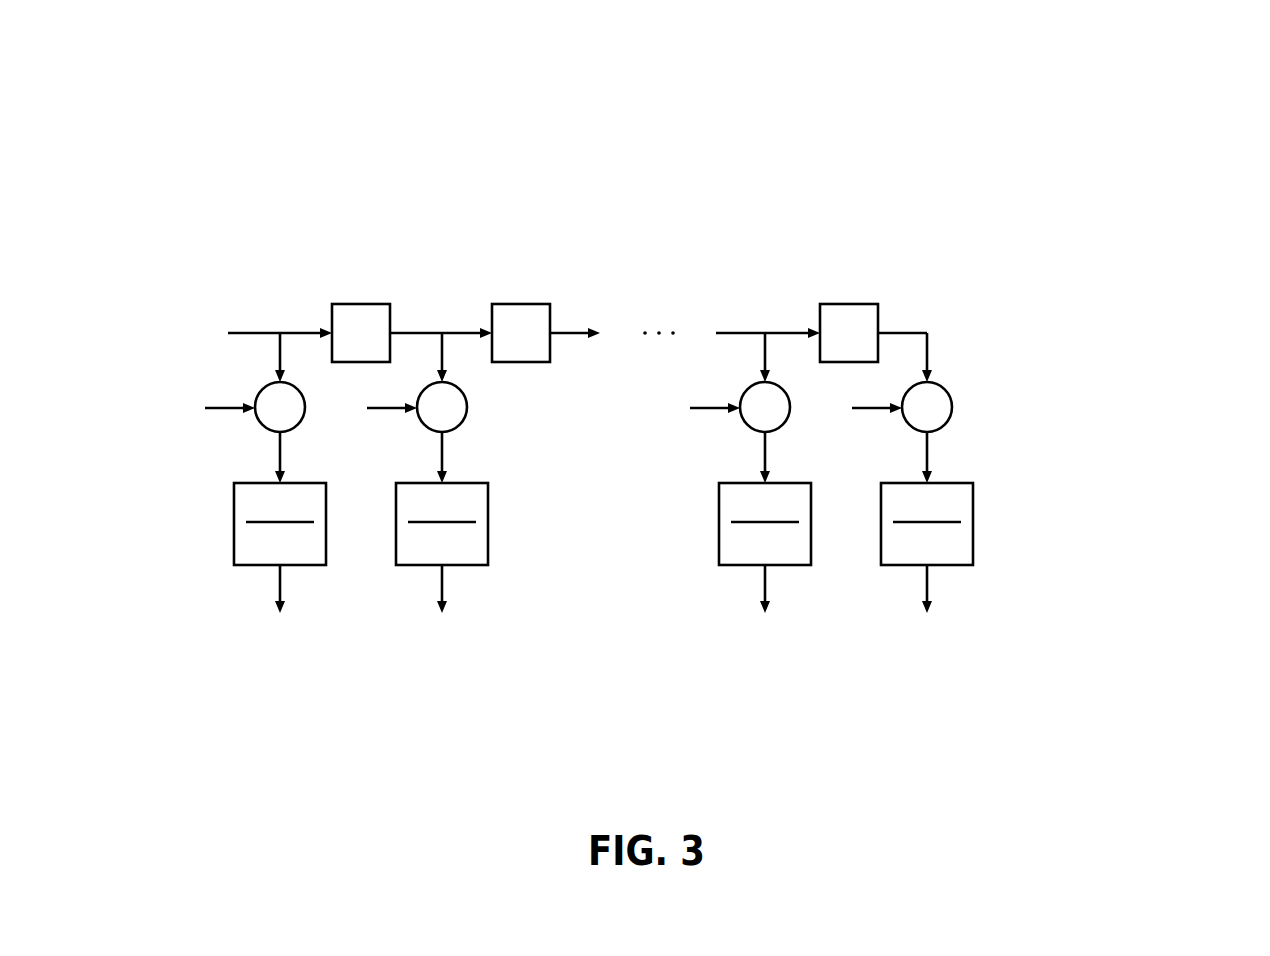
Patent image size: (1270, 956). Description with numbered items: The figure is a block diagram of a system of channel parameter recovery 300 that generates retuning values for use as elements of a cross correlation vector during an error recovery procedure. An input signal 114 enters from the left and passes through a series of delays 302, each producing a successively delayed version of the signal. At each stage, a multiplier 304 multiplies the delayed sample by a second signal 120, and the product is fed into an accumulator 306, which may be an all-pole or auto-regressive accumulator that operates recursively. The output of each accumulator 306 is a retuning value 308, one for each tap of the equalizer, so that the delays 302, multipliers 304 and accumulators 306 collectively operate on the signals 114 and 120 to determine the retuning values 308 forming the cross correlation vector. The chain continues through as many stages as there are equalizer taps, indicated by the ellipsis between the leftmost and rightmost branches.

The system of channel parameter recovery 300 is at (1155, 80).
The signal 114 is at (232, 303).
The signal 120 is at (188, 383).
The delay 302 is at (362, 305).
The multiplier 304 is at (298, 425).
The accumulator 306 is at (235, 483).
The retuning value 308 is at (258, 622).